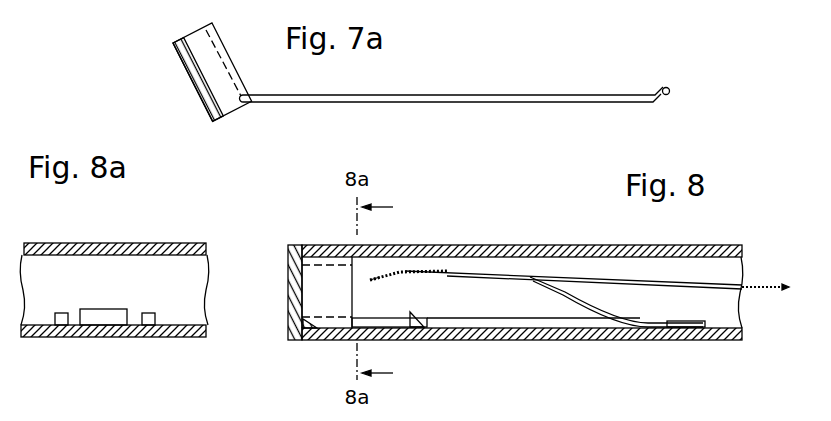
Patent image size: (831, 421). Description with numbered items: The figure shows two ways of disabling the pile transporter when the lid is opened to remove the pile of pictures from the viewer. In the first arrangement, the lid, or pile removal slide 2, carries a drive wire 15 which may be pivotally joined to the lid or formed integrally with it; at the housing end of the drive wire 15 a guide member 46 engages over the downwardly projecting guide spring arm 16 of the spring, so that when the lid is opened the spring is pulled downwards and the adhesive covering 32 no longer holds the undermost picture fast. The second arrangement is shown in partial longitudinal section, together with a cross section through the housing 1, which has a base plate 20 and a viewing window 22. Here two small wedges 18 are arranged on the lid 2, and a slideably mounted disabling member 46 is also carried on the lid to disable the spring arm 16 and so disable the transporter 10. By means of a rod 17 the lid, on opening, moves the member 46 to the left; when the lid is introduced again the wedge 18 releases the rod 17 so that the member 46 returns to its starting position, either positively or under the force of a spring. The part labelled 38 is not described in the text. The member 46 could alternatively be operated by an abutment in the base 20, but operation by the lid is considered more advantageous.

In FIG. 8A, the housing 1 is at (82, 241).
In FIG. 8, the housing 1 is at (319, 243).
In FIG. 7A, the pile removal slide 2 is at (192, 82).
In FIG. 8, the pile removal slide 2 is at (288, 293).
In FIG. 8, the transporter 10 is at (501, 267).
In FIG. 7A, the drive wire 15 is at (513, 100).
In FIG. 8, the guide spring arm 16 is at (570, 292).
In FIG. 8, the rod 17 is at (483, 327).
In FIG. 8A, the wedge 18 is at (60, 313).
In FIG. 8, the wedge 18 is at (286, 333).
In FIG. 8A, the base plate 20 is at (128, 337).
In FIG. 8, the base plate 20 is at (548, 341).
In FIG. 8, the viewing window 22 is at (547, 246).
In FIG. 8, the adhesive covering 32 is at (417, 268).
In FIG. 8, the strip end 38 is at (380, 276).
In FIG. 8, the disabling member 46 is at (697, 318).